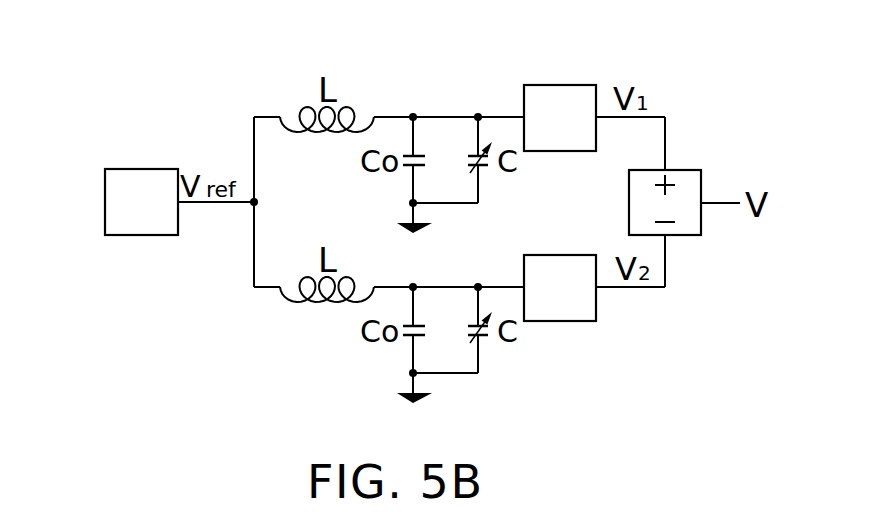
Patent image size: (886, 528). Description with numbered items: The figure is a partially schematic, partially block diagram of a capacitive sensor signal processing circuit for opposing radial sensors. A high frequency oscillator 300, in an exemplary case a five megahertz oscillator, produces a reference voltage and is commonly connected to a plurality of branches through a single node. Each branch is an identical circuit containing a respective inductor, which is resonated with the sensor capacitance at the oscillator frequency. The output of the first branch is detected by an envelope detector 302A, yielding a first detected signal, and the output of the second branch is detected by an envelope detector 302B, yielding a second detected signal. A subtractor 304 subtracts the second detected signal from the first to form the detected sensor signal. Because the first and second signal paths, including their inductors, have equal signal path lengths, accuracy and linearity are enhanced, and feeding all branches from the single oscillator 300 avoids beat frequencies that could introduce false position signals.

The high frequency oscillator 300 is at (100, 162).
The envelope detector 302A is at (679, 83).
The envelope detector 302B is at (680, 377).
The subtractor 304 is at (726, 242).